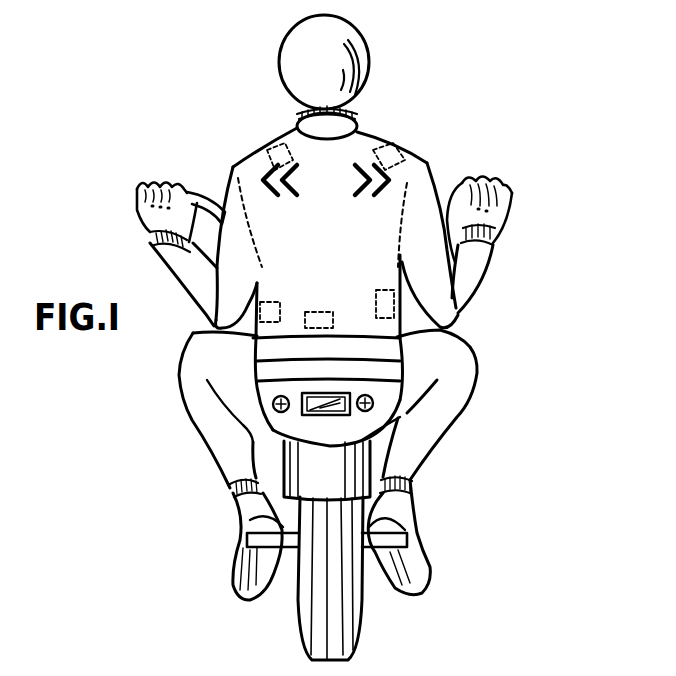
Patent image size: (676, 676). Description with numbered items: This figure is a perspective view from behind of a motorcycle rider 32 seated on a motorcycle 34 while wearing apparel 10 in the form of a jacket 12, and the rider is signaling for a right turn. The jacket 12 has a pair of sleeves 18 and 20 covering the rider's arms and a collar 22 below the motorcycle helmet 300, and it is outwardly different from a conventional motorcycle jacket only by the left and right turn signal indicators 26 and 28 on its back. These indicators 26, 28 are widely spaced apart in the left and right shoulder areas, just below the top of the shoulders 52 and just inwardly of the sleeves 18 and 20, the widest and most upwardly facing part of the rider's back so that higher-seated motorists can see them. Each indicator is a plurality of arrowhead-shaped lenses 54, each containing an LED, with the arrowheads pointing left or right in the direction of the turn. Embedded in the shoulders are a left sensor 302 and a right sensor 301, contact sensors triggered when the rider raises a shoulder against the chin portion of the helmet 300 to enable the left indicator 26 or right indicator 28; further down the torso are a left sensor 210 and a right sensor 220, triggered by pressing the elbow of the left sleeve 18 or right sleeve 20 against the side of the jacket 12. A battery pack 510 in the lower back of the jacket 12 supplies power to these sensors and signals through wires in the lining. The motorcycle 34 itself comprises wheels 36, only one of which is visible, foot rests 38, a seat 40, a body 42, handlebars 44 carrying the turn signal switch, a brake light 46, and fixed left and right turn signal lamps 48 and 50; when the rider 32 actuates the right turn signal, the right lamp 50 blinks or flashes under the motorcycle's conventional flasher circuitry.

The apparel 10 is at (448, 96).
The jacket 12 is at (224, 169).
The sleeve 18 is at (210, 326).
The sleeve 20 is at (458, 303).
The collar 22 is at (297, 124).
The left turn signal indicator 26 is at (287, 202).
The right turn signal indicator 28 is at (360, 208).
The motorcycle rider 32 is at (466, 166).
The motorcycle 34 is at (470, 537).
The wheels 36 is at (337, 620).
The foot rests 38 is at (245, 543).
The seat 40 is at (328, 391).
The body 42 is at (272, 403).
The handlebars 44 is at (137, 192).
The brake light 46 is at (337, 420).
The left turn signal lamp 48 is at (257, 430).
The right turn signal lamp 50 is at (400, 417).
The shoulders 52 is at (237, 167).
The arrowhead-shaped lenses 54 is at (293, 194).
The left sensor 210 is at (276, 307).
The right sensor 220 is at (393, 293).
The motorcycle helmet 300 is at (346, 47).
The right sensor 301 is at (392, 150).
The left sensor 302 is at (274, 148).
The battery pack 510 is at (333, 317).